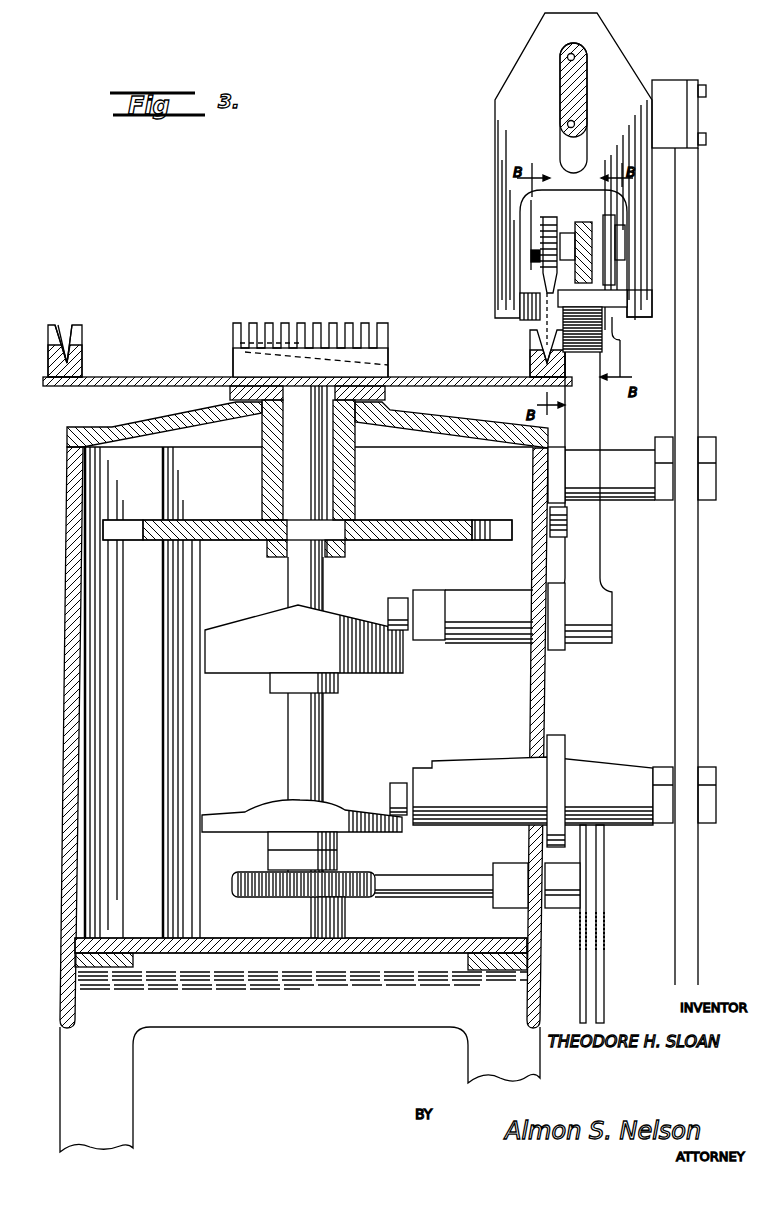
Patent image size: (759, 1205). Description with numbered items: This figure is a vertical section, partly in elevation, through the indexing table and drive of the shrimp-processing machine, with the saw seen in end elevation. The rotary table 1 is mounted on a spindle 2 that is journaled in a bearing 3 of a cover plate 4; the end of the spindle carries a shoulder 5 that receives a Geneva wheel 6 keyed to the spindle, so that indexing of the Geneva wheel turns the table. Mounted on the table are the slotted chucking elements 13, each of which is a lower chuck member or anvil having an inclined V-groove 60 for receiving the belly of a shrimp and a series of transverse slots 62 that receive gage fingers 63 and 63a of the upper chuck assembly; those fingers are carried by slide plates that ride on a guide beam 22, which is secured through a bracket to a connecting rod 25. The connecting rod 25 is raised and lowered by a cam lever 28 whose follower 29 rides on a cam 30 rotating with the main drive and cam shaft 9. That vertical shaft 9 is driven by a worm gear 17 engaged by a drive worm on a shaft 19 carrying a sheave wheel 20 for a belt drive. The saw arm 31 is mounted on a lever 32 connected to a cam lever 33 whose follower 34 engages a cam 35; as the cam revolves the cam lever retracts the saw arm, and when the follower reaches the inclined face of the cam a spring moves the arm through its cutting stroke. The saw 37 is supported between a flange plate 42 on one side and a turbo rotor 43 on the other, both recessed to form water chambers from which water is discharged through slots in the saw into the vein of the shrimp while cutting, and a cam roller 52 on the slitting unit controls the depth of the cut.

The table 1 is at (157, 377).
The spindle 2 is at (270, 478).
The bearing 3 is at (283, 499).
The cover plate 4 is at (461, 428).
The shoulder 5 is at (282, 558).
The Geneva wheel 6 is at (420, 521).
The main drive and cam shaft 9 is at (323, 729).
The slotted chucking element 13 is at (83, 355).
The worm gear 17 is at (350, 898).
The shaft 19 is at (435, 866).
The sheave wheel 20 is at (605, 887).
The guide beam 22 is at (560, 92).
The connecting rod 25 is at (699, 632).
The cam lever 28 is at (437, 760).
The follower 29 is at (399, 783).
The cam 30 is at (365, 804).
The saw arm 31 is at (586, 224).
The lever 32 is at (600, 422).
The cam lever 33 is at (434, 586).
The follower 34 is at (398, 598).
The cam 35 is at (364, 604).
The saw 37 is at (523, 203).
The flange plate 42 is at (574, 217).
The turbo rotor 43 is at (538, 222).
The cam roller 52 is at (616, 230).
The V-groove 60 is at (68, 340).
The transverse slots 62 is at (83, 333).
The gage finger 63 is at (614, 320).
The gage finger 63a is at (523, 318).